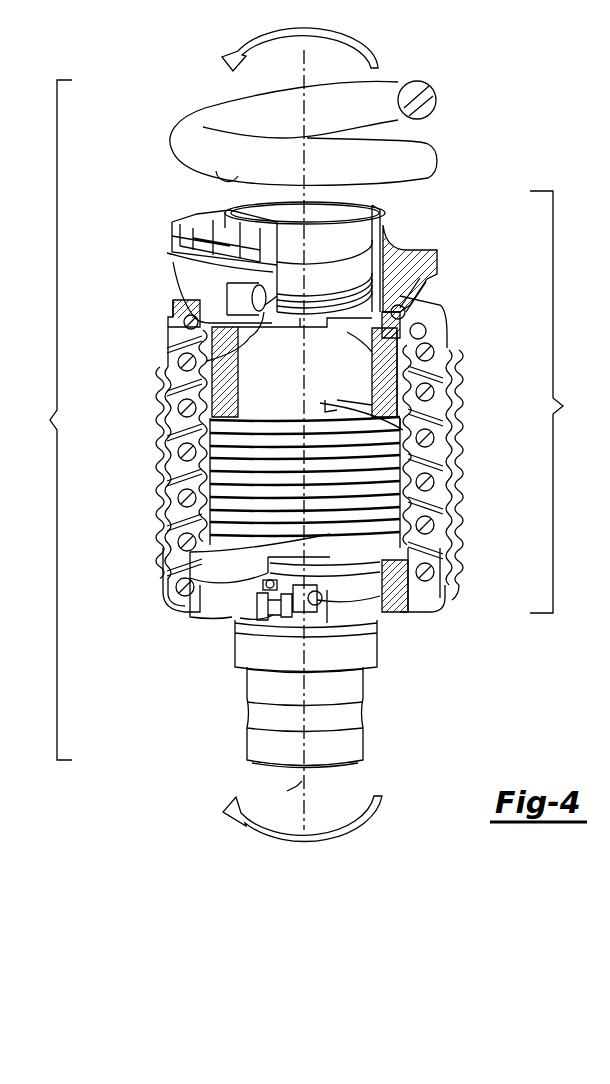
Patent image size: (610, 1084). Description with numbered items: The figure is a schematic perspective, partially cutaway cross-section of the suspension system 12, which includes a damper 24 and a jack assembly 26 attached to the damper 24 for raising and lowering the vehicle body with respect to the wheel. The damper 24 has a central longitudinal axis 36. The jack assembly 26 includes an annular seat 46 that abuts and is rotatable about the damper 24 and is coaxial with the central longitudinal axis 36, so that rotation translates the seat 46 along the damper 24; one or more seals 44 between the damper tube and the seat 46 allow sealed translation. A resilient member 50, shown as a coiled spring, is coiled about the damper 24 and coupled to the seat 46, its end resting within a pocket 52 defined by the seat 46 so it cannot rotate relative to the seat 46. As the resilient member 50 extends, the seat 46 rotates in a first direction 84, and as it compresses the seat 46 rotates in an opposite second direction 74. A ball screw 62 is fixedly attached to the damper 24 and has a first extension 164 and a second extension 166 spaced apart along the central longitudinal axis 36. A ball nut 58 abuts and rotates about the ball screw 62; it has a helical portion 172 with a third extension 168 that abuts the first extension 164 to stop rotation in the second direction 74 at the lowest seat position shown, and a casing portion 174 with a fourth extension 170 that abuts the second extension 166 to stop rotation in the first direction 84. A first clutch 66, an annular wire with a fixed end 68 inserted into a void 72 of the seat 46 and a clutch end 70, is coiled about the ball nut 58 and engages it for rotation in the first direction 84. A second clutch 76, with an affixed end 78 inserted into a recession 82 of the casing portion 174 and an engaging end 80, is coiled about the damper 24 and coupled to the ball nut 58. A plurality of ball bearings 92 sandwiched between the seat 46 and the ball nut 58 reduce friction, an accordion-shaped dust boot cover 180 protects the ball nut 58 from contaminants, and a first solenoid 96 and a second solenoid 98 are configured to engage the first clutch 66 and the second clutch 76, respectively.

The suspension system 12 is at (47, 420).
The damper 24 is at (243, 743).
The jack assembly 26 is at (557, 402).
The central longitudinal axis 36 is at (281, 792).
The seal 44 is at (232, 204).
The seat 46 is at (430, 258).
The resilient member 50 is at (440, 92).
The pocket 52 is at (172, 258).
The ball nut 58 is at (165, 487).
The ball screw 62 is at (182, 416).
The first clutch 66 is at (345, 273).
The fixed end 68 is at (302, 245).
The clutch end 70 is at (203, 361).
The void 72 is at (200, 272).
The second direction 74 is at (238, 828).
The second clutch 76 is at (367, 603).
The affixed end 78 is at (165, 583).
The engaging end 80 is at (280, 622).
The recession 82 is at (266, 582).
The first direction 84 is at (374, 56).
The ball bearings 92 is at (400, 295).
The first solenoid 96 is at (226, 298).
The second solenoid 98 is at (307, 623).
The first extension 164 is at (398, 362).
The second extension 166 is at (402, 422).
The third extension 168 is at (297, 330).
The fourth extension 170 is at (410, 549).
The helical portion 172 is at (168, 520).
The casing portion 174 is at (413, 612).
The dust boot cover 180 is at (160, 463).